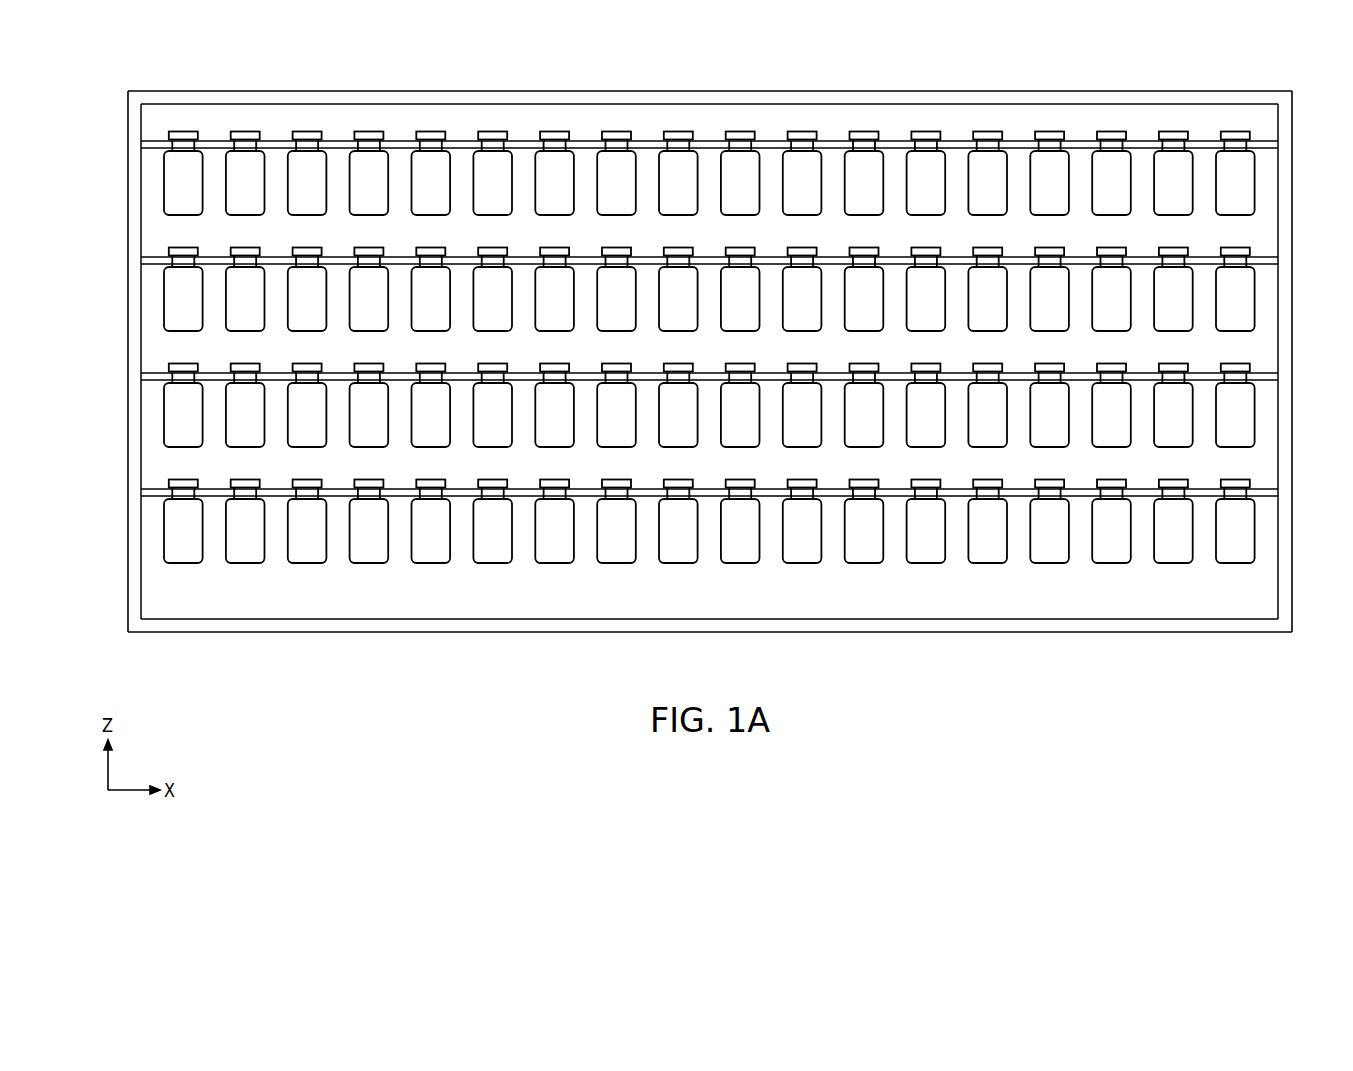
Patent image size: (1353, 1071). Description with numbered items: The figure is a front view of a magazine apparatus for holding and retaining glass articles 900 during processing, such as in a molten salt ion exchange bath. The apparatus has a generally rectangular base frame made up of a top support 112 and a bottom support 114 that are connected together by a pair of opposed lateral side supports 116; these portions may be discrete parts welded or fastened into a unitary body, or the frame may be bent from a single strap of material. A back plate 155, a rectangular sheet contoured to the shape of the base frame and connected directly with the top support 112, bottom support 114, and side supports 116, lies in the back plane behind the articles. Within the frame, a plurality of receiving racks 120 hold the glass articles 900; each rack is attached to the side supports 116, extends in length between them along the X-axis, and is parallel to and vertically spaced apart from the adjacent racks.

The top support 112 is at (805, 91).
The bottom support 114 is at (857, 632).
The side supports 116 is at (128, 323).
The receiving racks 120 is at (1017, 140).
The back plate 155 is at (523, 115).
The glass articles 900 is at (555, 563).